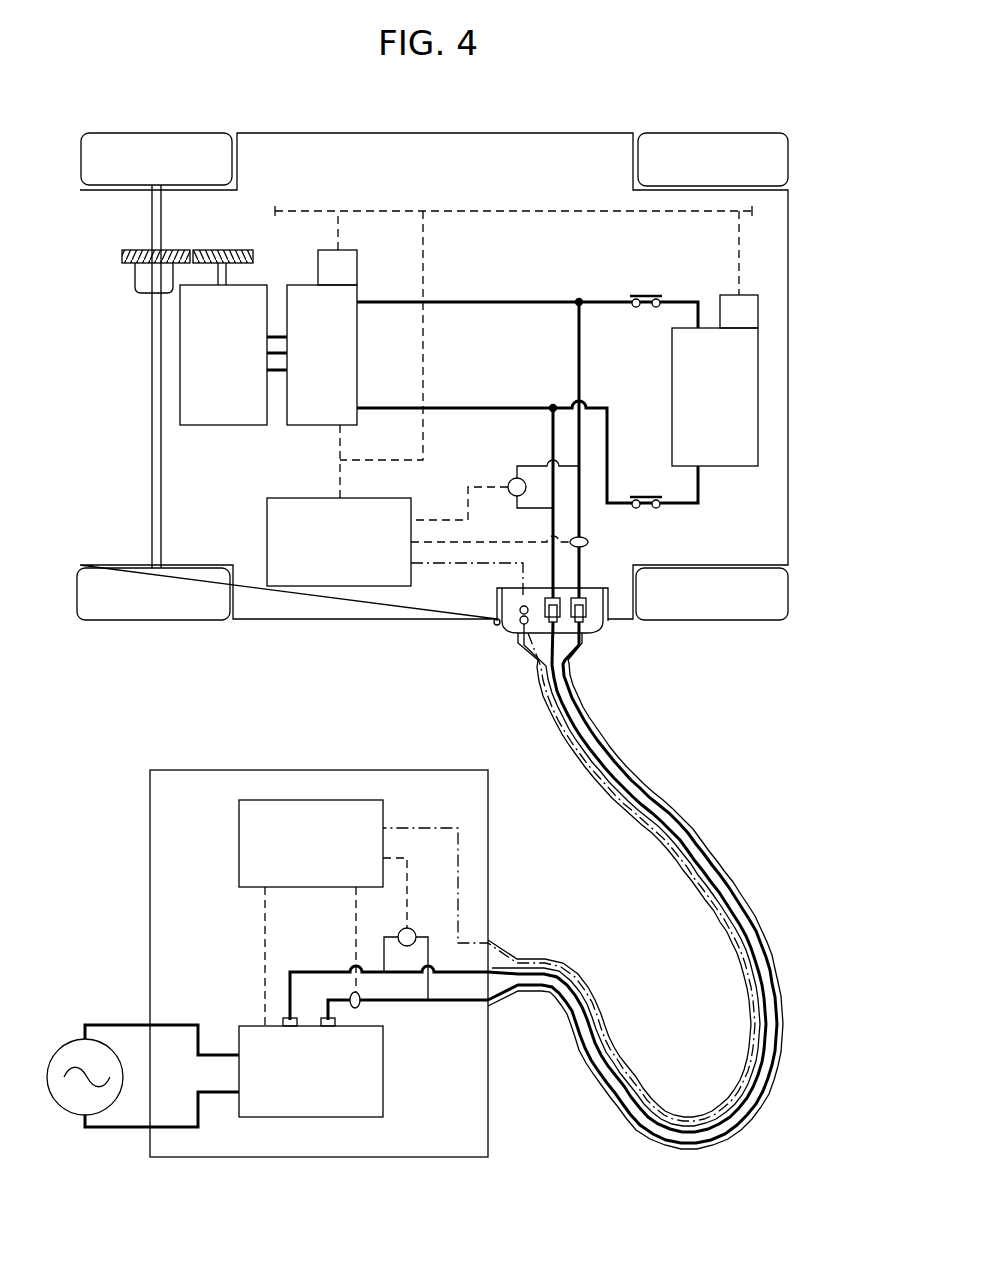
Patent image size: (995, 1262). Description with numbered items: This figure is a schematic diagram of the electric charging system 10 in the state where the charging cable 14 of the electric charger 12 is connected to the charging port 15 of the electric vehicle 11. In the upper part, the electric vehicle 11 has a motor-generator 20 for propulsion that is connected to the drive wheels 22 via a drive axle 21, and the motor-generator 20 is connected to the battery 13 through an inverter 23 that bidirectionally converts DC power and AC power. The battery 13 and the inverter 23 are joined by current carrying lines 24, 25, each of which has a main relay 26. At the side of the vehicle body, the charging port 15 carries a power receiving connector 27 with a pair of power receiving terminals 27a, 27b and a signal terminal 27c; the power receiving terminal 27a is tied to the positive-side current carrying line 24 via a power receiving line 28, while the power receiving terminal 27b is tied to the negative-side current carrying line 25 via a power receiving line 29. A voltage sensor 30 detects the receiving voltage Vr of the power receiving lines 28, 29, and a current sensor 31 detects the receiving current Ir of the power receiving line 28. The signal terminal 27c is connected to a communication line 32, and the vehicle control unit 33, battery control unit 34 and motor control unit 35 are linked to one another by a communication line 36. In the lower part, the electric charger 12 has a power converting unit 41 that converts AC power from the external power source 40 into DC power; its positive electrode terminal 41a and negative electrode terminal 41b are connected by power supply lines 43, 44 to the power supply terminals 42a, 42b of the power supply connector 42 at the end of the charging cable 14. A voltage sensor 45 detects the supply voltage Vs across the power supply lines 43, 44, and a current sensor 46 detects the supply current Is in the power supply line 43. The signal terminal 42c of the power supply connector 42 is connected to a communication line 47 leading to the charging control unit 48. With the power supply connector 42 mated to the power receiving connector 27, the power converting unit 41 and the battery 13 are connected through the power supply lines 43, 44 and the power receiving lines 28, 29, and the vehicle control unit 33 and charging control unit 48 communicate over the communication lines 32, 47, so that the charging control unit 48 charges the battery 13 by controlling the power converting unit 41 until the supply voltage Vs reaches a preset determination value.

The electric charging system 10 is at (700, 95).
The electric vehicle 11 is at (588, 128).
The electric charger 12 is at (145, 760).
The battery 13 is at (738, 468).
The charging cable 14 is at (662, 778).
The charging port 15 is at (490, 645).
The motor-generator 20 is at (217, 428).
The drive axle 21 is at (150, 345).
The drive wheels 22 is at (150, 133).
The inverter 23 is at (305, 427).
The current carrying line 24 is at (530, 300).
The current carrying line 25 is at (515, 405).
The main relay 26 is at (645, 294).
The power receiving connector 27 is at (610, 607).
The power receiving terminal 27a is at (590, 600).
The power receiving terminal 27b is at (521, 609).
The signal terminal 27c is at (495, 624).
The power receiving line 28 is at (582, 349).
The power receiving line 29 is at (551, 436).
The voltage sensor 30 is at (508, 484).
The current sensor 31 is at (590, 542).
The communication line 32 is at (430, 566).
The vehicle control unit 33 is at (266, 534).
The battery control unit 34 is at (732, 295).
The motor control unit 35 is at (360, 266).
The communication line 36 is at (572, 211).
The external power source 40 is at (65, 1045).
The power converting unit 41 is at (385, 1100).
The positive electrode terminal 41a is at (323, 1017).
The negative electrode terminal 41b is at (288, 1017).
The power supply connector 42 is at (612, 631).
The power supply terminal 42a is at (587, 634).
The power supply terminal 42b is at (549, 632).
The signal terminal 42c is at (519, 635).
The power supply line 43 is at (683, 812).
The power supply line 44 is at (697, 858).
The voltage sensor 45 is at (412, 929).
The current sensor 46 is at (360, 1008).
The communication line 47 is at (720, 906).
The charging control unit 48 is at (355, 800).